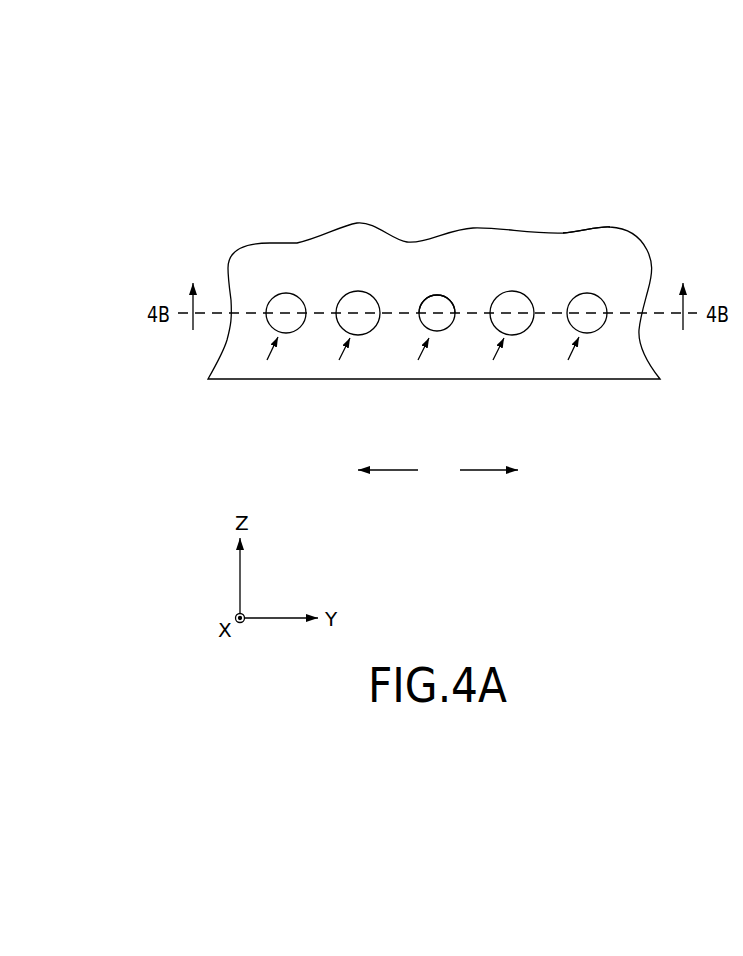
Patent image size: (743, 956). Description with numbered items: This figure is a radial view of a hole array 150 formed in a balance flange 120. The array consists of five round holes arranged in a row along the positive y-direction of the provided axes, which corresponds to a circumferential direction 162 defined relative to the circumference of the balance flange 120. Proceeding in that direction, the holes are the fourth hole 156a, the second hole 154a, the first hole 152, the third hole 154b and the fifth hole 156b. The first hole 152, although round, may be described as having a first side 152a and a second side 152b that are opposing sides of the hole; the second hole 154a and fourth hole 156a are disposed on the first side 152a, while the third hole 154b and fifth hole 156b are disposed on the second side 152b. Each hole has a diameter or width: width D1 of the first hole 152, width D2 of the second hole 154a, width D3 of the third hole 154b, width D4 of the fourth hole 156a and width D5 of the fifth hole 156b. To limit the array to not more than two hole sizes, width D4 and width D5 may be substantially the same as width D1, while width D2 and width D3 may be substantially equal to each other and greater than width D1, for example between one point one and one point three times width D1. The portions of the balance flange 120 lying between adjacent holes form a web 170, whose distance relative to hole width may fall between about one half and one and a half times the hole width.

The balance flange 120 is at (633, 254).
The hole array 150 is at (218, 243).
The web 170 is at (552, 310).
The first hole 152 is at (446, 331).
The first side 152a is at (419, 315).
The second side 152b is at (455, 315).
The second hole 154a is at (366, 336).
The third hole 154b is at (526, 336).
The fourth hole 156a is at (293, 332).
The fifth hole 156b is at (594, 332).
The circumferential direction 162 is at (438, 471).
The width of first hole D1 is at (445, 291).
The width of second hole D2 is at (365, 290).
The width of third hole D3 is at (518, 288).
The width of fourth hole D4 is at (291, 289).
The width of fifth hole D5 is at (597, 289).